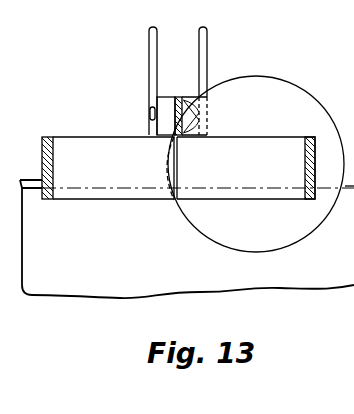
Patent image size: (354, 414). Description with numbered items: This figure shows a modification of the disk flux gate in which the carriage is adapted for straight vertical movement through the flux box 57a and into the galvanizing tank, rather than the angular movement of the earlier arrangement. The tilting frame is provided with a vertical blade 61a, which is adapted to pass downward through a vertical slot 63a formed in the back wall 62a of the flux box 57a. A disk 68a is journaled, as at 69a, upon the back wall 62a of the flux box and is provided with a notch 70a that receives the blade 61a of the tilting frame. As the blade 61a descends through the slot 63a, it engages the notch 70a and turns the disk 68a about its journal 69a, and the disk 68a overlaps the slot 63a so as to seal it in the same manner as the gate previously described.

The flux box 57a is at (42, 150).
The vertical blade 61a is at (180, 106).
The back wall 62a is at (98, 150).
The vertical slot 63a is at (175, 172).
The disk 68a is at (287, 88).
The journal 69a is at (253, 168).
The notch 70a is at (185, 130).